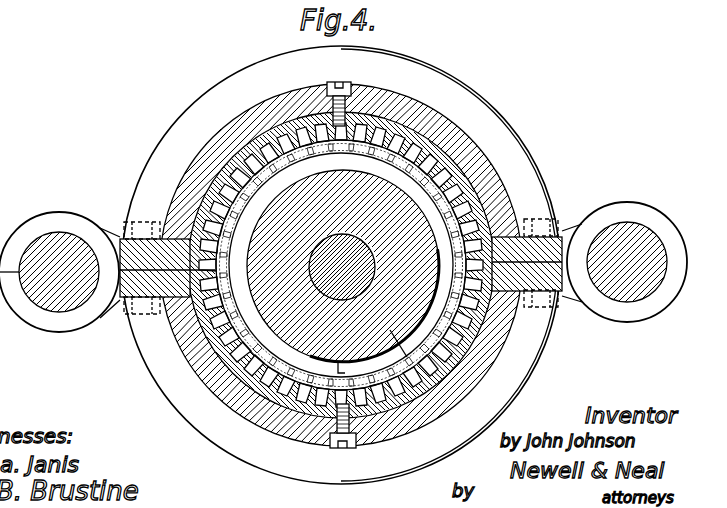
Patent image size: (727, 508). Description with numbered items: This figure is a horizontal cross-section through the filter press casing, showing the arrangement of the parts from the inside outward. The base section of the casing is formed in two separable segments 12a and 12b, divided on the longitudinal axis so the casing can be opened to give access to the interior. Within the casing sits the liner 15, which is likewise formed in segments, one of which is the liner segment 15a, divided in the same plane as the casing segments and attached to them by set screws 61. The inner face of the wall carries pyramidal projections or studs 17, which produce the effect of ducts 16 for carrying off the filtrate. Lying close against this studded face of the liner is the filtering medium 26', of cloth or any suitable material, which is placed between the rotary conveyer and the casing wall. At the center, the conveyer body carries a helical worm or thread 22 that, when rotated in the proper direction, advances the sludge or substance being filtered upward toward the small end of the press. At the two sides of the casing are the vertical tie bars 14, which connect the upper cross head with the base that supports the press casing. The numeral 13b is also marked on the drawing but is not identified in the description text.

The vertical tie bars 14 is at (58, 243).
The liner 15 is at (414, 137).
The liner segment 15a is at (469, 188).
The ducts 16 is at (260, 148).
The pyramidal projections or studs 17 is at (220, 202).
The casing segment 12a is at (530, 327).
The casing segment 12b is at (534, 197).
The filtering medium 26' is at (341, 265).
The set screws 61 is at (345, 87).
The worm or thread 22 is at (343, 362).
The bearing 13b is at (470, 352).